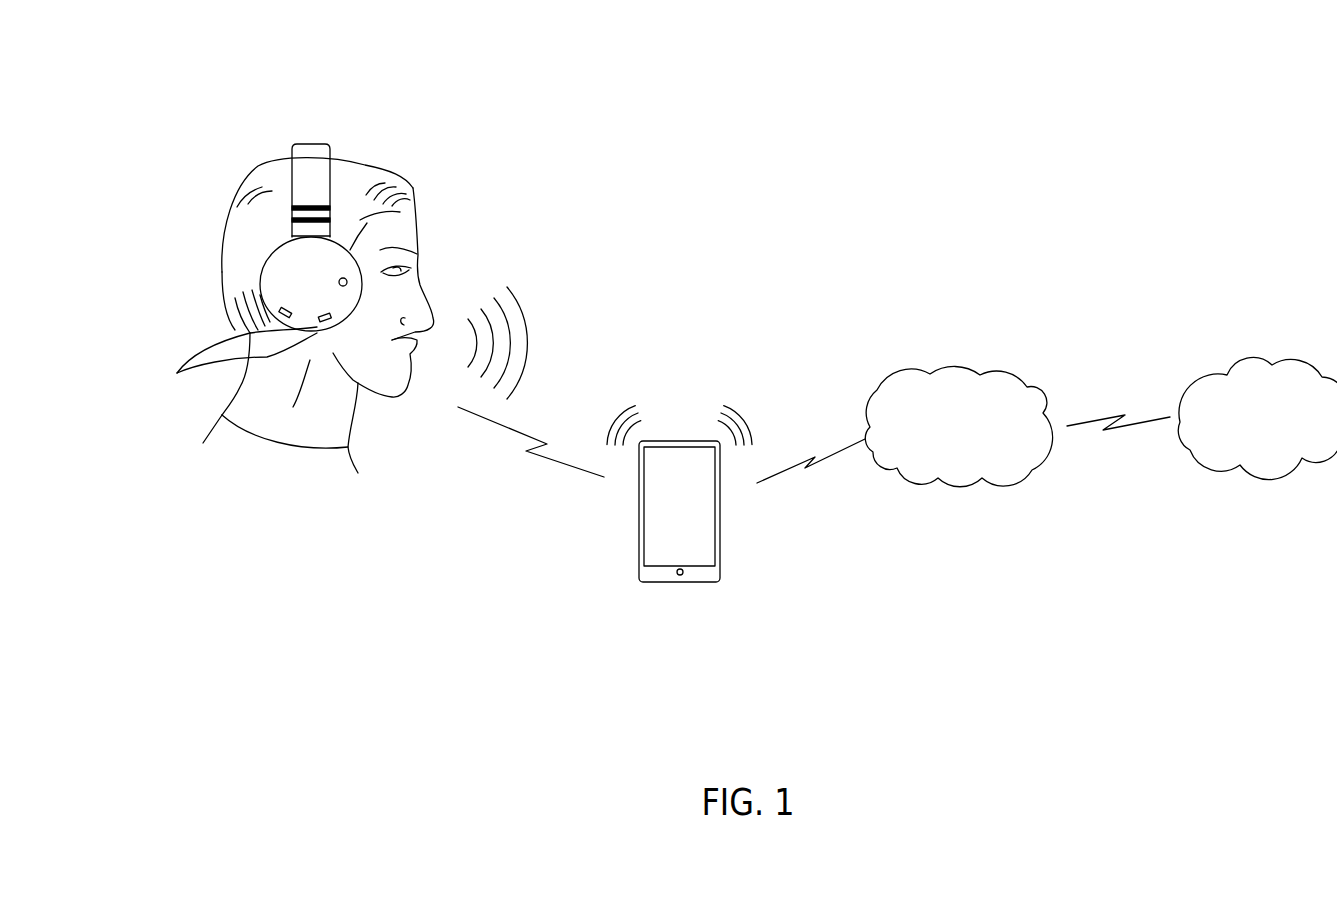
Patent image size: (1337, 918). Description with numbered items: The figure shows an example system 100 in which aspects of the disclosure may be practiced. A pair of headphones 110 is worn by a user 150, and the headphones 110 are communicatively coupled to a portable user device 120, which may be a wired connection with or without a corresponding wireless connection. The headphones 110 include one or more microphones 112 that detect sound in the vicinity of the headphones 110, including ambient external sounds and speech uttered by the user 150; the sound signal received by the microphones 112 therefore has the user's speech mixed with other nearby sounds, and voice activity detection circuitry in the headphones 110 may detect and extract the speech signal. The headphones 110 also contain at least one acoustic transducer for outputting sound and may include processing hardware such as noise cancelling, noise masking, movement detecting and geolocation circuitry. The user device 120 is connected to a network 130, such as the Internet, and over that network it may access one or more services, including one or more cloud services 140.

The system 100 is at (1143, 192).
The headphones 110 is at (312, 140).
The microphones 112 is at (236, 368).
The portable user device 120 is at (678, 583).
The network 130 is at (940, 458).
The cloud services 140 is at (1248, 448).
The user 150 is at (225, 217).